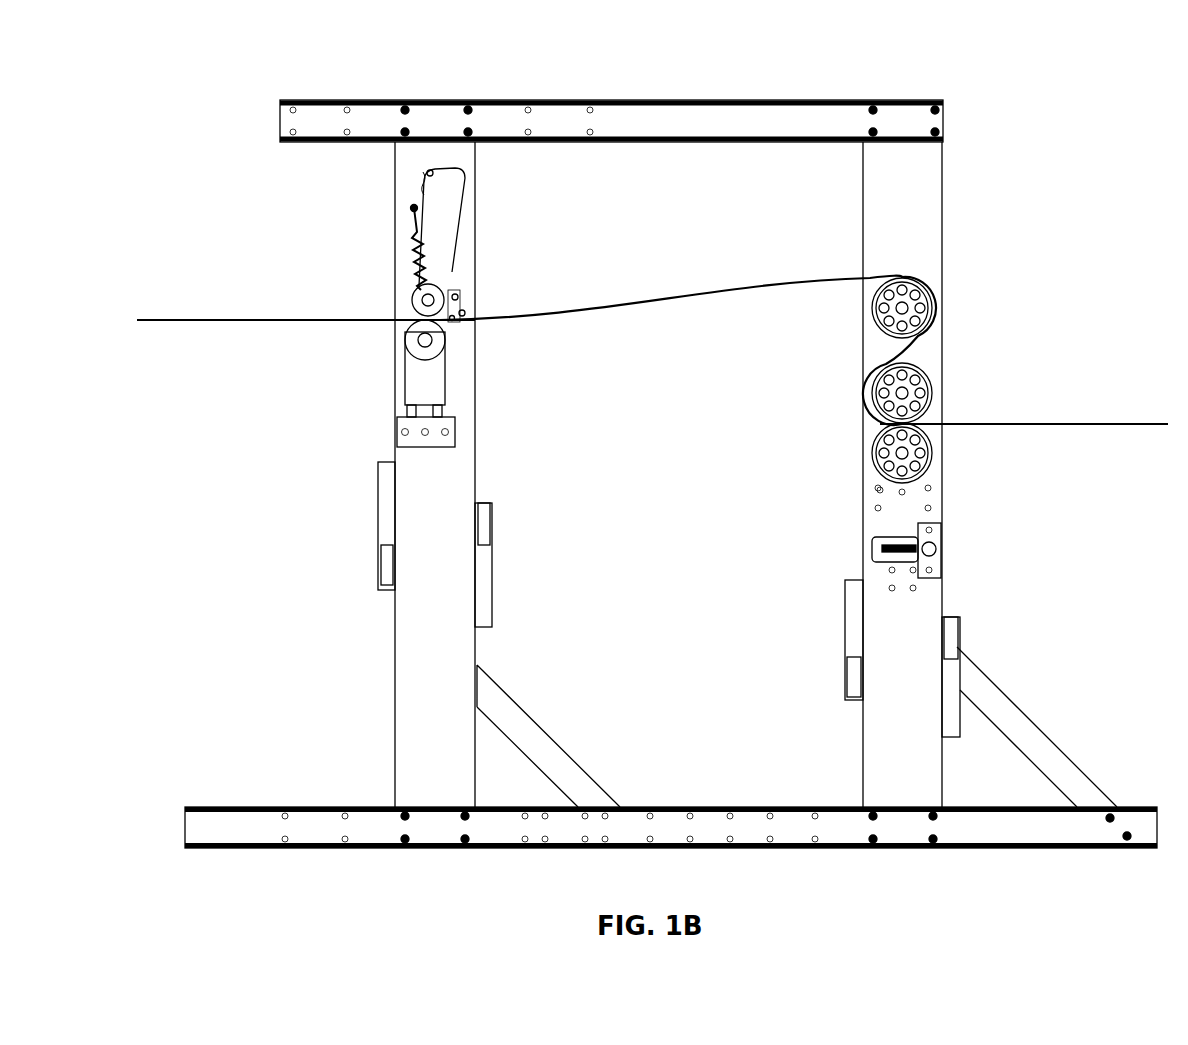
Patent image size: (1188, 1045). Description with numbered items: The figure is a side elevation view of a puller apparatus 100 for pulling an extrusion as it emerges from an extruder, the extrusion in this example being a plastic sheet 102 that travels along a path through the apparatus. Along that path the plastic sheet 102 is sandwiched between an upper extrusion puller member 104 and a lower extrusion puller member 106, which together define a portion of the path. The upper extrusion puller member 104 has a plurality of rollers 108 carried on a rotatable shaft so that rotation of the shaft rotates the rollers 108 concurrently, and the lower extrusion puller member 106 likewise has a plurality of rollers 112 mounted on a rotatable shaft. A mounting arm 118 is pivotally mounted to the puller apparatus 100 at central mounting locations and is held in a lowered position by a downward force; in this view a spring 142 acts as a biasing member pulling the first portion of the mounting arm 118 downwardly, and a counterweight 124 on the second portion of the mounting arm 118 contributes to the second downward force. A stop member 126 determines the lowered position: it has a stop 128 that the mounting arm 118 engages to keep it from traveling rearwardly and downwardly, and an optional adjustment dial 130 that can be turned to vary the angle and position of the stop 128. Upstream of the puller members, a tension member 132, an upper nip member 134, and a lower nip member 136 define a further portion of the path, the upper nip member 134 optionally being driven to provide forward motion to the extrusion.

The puller apparatus 100 is at (290, 40).
The plastic sheet 102 is at (190, 318).
The upper extrusion puller member 104 is at (402, 278).
The lower extrusion puller member 106 is at (437, 360).
The rollers 108 is at (413, 300).
The rollers 112 is at (412, 348).
The mounting arm 118 is at (465, 205).
The counterweight 124 is at (432, 168).
The stop member 126 is at (464, 331).
The stop 128 is at (457, 293).
The adjustment dial 130 is at (466, 315).
The tension member 132 is at (930, 318).
The upper nip member 134 is at (930, 378).
The lower nip member 136 is at (930, 462).
The spring 142 is at (413, 236).